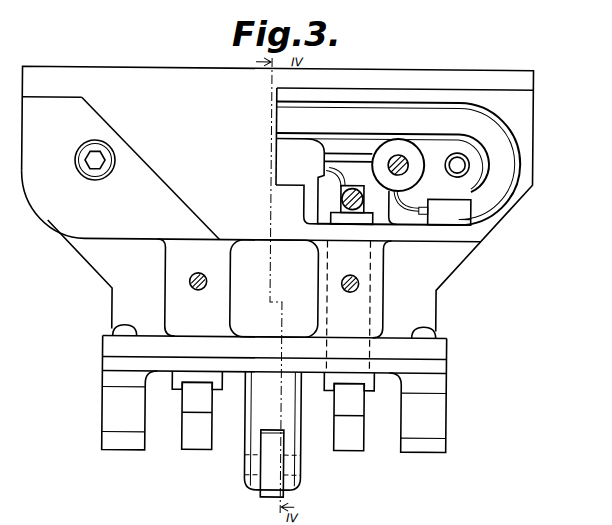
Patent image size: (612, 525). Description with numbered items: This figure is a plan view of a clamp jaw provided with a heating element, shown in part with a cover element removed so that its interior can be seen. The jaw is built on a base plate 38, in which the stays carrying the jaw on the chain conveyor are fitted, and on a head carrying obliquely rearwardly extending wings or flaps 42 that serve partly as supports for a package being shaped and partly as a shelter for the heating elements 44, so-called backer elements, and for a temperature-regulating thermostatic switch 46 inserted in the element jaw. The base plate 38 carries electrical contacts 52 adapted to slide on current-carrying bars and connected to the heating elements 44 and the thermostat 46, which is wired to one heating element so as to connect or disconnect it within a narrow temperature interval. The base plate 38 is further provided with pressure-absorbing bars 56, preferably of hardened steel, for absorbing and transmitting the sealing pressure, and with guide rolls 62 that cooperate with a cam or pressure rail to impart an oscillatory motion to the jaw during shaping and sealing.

The base plate 38 is at (102, 347).
The wings or flaps 42 is at (182, 192).
The heating elements 44 is at (503, 185).
The temperature-regulating thermostatic switch 46 is at (285, 163).
The electrical contacts 52 is at (197, 440).
The pressure-absorbing bars 56 is at (102, 437).
The guide rolls 62 is at (263, 498).